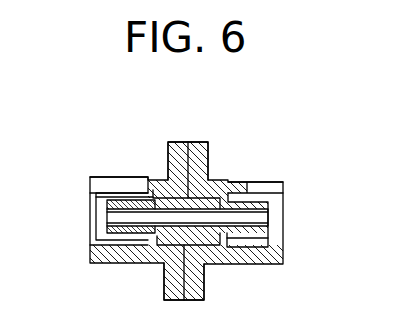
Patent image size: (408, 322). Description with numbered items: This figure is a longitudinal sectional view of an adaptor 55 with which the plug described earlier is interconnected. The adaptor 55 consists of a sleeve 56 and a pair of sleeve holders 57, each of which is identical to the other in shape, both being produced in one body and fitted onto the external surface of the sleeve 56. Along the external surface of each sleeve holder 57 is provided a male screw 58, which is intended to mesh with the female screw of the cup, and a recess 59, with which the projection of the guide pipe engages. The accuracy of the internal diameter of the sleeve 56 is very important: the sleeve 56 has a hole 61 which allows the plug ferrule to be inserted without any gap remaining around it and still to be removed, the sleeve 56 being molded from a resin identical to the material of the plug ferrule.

The adaptor 55 is at (142, 138).
The sleeve 56 is at (209, 201).
The sleeve holder 57 is at (199, 142).
The male screw 58 is at (100, 177).
The recess 59 is at (92, 185).
The hole 61 is at (256, 214).